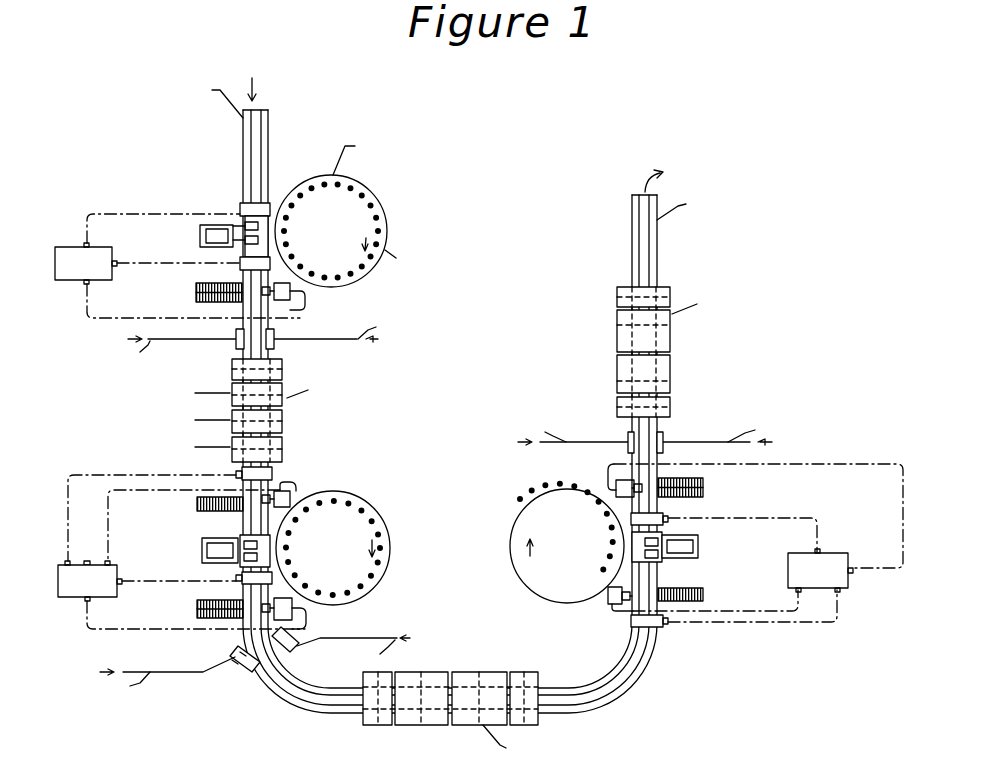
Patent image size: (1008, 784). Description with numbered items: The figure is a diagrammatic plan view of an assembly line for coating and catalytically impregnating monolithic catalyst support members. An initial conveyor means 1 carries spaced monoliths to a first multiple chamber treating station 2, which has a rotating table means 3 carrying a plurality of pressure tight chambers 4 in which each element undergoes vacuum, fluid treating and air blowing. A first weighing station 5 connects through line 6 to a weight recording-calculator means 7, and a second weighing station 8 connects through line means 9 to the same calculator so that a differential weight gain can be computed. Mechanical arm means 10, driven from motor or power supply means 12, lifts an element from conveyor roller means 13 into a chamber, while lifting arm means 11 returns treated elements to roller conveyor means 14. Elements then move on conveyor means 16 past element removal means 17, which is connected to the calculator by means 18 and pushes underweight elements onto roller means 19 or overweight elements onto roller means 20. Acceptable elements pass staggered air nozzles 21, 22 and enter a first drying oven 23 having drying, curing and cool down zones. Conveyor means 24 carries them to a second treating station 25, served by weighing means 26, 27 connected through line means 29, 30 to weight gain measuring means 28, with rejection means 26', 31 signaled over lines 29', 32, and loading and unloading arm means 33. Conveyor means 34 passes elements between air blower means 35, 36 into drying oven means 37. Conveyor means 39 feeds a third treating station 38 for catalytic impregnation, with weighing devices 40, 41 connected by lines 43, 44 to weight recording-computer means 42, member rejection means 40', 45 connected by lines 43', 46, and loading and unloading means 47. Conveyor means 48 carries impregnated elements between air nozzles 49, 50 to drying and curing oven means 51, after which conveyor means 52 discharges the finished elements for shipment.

The initial conveyor means 1 is at (270, 132).
The first multiple chamber treating station 2 is at (312, 170).
The rotating table means 3 is at (378, 270).
The pressure tight chambers 4 is at (386, 254).
The first weighing station 5 is at (254, 207).
The line 6 is at (143, 200).
The weight recording-calculator means 7 is at (60, 247).
The second weighing station 8 is at (273, 262).
The line means 9 is at (165, 252).
The mechanical arm means 10 is at (243, 222).
The lifting arm means 11 is at (245, 246).
The motor or power supply means 12 is at (200, 226).
The conveyor roller means 13 is at (270, 224).
The roller conveyor means 14 is at (270, 238).
The conveyor means 16 is at (246, 323).
The element removal means 17 is at (305, 310).
The means 18 is at (100, 318).
The roller means 19 is at (196, 287).
The roller means 20 is at (196, 297).
The air nozzle means 21 is at (275, 345).
The air nozzle means 22 is at (238, 345).
The first drying oven 23 is at (293, 448).
The conveyor means 24 is at (275, 470).
The second treating station 25 is at (396, 510).
The weighing means 26 is at (217, 464).
The element rejection means 26' is at (303, 486).
The weighing means 27 is at (240, 580).
The weight gain measuring means 28 is at (62, 600).
The line means 29 is at (152, 503).
The line 29' is at (194, 523).
The line means 30 is at (178, 575).
The element rejection means 31 is at (306, 629).
The line 32 is at (165, 630).
The loading and unloading arm means 33 is at (202, 548).
The conveyor means 34 is at (320, 700).
The air blower means 35 is at (293, 655).
The air blower means 36 is at (245, 680).
The drying oven means 37 is at (476, 670).
The third treating station 38 is at (511, 590).
The conveyor means 39 is at (620, 695).
The weighing device 40 is at (667, 637).
The member rejection means 40' is at (610, 616).
The weighing device 41 is at (665, 518).
The weight recording-computer means 42 is at (838, 553).
The line 43 is at (752, 622).
The line 43' is at (715, 592).
The line 44 is at (780, 512).
The member rejection means 45 is at (606, 480).
The line 46 is at (818, 458).
The element loading and unloading means 47 is at (700, 548).
The conveyor means 48 is at (646, 428).
The air nozzle 49 is at (665, 435).
The air nozzle 50 is at (628, 438).
The drying and curing oven means 51 is at (683, 370).
The conveyor means 52 is at (632, 258).